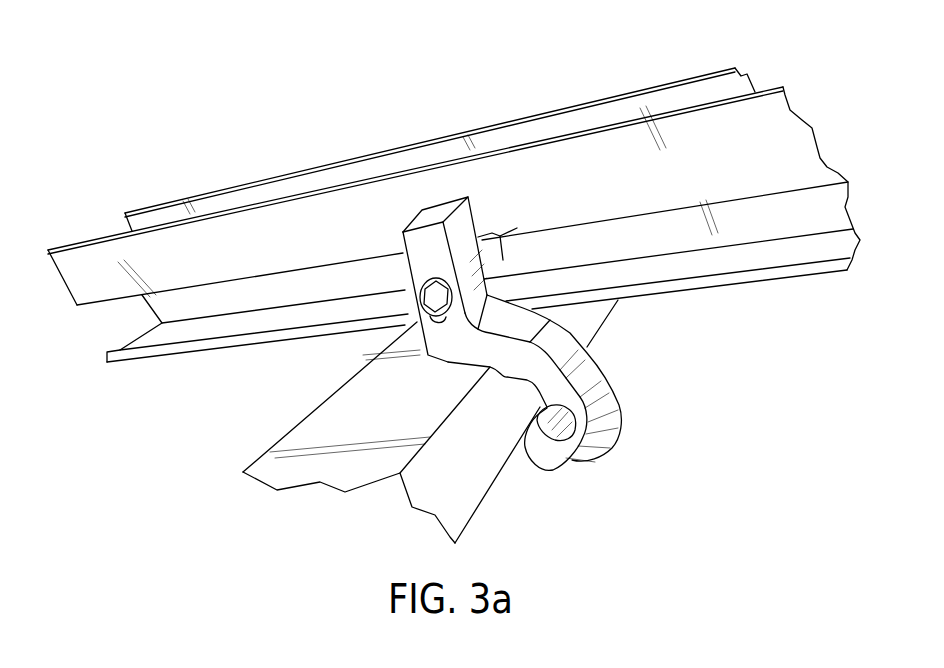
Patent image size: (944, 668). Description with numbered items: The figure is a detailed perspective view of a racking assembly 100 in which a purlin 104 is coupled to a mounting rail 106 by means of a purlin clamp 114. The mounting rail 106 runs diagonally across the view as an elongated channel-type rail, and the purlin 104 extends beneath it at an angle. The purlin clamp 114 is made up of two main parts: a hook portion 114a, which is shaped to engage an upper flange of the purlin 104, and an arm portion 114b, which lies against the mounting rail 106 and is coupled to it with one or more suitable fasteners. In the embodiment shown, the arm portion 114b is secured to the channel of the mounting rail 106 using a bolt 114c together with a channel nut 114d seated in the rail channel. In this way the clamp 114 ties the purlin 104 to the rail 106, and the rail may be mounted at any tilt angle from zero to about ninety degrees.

The racking assembly 100 is at (243, 95).
The purlin 104 is at (288, 428).
The mounting rail 106 is at (212, 191).
The purlin clamp 114 is at (627, 395).
The hook portion 114a is at (620, 444).
The arm portion 114b is at (403, 236).
The bolt 114c is at (415, 325).
The channel nut 114d is at (503, 253).